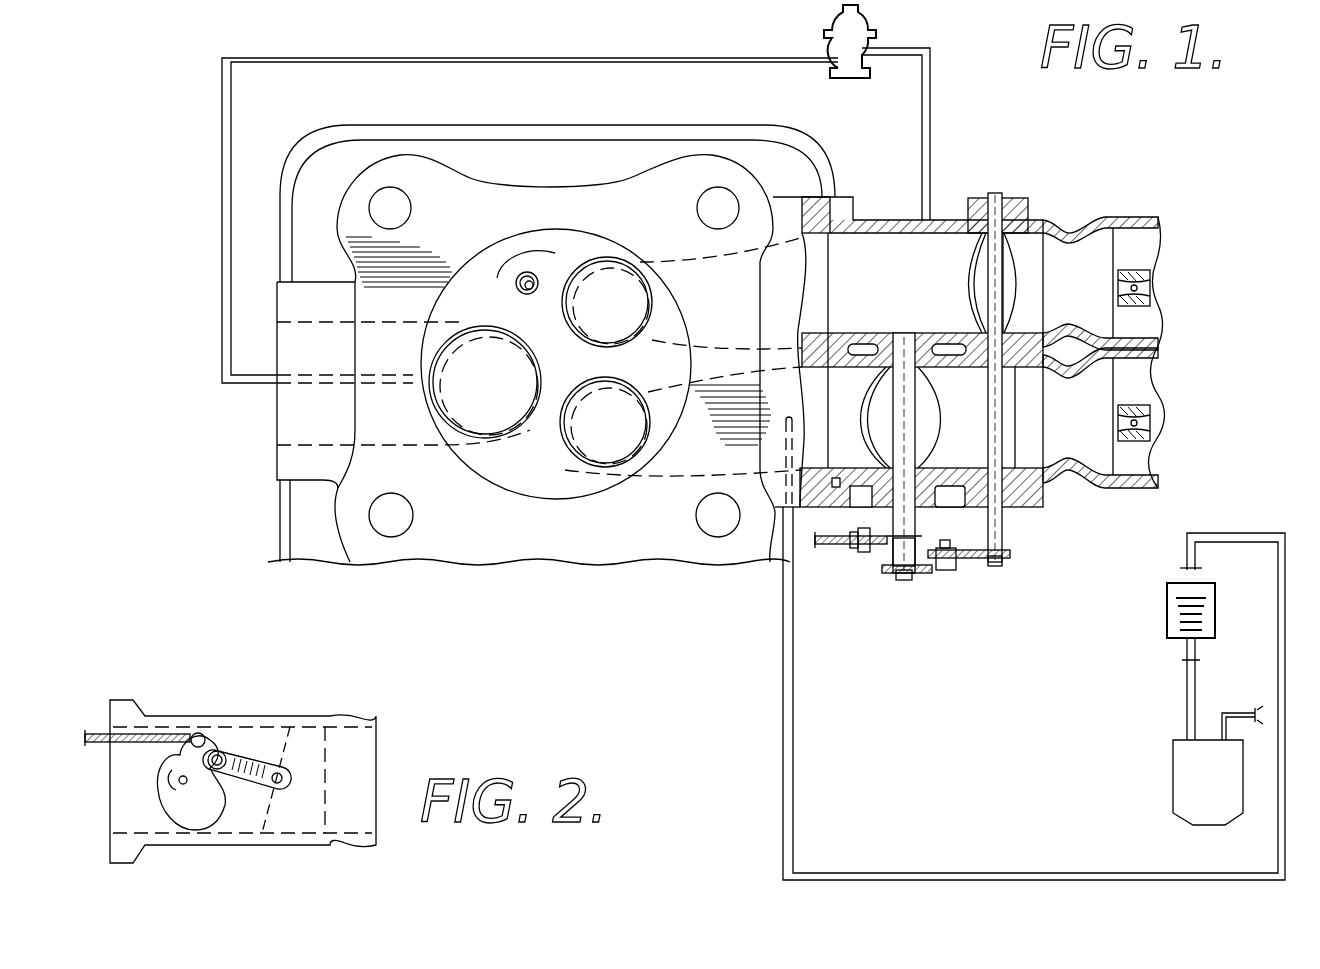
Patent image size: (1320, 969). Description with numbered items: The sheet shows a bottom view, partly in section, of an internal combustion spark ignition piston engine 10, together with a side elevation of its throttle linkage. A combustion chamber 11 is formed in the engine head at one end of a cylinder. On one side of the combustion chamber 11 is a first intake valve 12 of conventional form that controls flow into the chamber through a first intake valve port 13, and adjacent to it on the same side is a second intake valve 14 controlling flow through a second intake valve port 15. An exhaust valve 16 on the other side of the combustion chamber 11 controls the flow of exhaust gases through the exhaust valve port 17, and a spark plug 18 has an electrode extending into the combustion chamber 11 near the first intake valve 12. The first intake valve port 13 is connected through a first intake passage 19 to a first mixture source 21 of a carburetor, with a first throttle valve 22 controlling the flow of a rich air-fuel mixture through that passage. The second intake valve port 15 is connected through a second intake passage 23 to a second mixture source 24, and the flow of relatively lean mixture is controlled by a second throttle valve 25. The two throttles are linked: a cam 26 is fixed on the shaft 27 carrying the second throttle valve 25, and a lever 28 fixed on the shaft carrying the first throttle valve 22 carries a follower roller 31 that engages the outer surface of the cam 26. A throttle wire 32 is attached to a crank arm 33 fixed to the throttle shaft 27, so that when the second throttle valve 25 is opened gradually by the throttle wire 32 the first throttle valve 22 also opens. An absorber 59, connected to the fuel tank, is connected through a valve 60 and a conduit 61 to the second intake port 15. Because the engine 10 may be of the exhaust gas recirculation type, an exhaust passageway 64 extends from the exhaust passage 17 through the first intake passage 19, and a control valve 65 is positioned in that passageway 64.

In FIG. 1, the internal combustion spark ignition piston engine 10 is at (272, 461).
In FIG. 1, the combustion chamber 11 is at (545, 480).
In FIG. 1, the first intake valve 12 is at (624, 317).
In FIG. 1, the first intake valve port 13 is at (772, 310).
In FIG. 1, the second intake valve 14 is at (622, 437).
In FIG. 1, the second intake valve port 15 is at (740, 405).
In FIG. 1, the exhaust valve 16 is at (498, 396).
In FIG. 1, the exhaust valve port 17 is at (312, 435).
In FIG. 1, the spark plug 18 is at (512, 289).
In FIG. 1, the first intake passage 19 is at (935, 240).
In FIG. 1, the first mixture source 21 is at (1098, 282).
In FIG. 1, the first throttle valve 22 is at (1020, 260).
In FIG. 2, the first throttle valve 22 is at (275, 838).
In FIG. 1, the second intake passage 23 is at (979, 441).
In FIG. 1, the second mixture source 24 is at (1106, 434).
In FIG. 1, the second throttle valve 25 is at (880, 430).
In FIG. 2, the second throttle valve 25 is at (203, 833).
In FIG. 1, the cam 26 is at (913, 580).
In FIG. 2, the cam 26 is at (213, 815).
In FIG. 1, the shaft 27 is at (896, 570).
In FIG. 2, the shaft 27 is at (175, 783).
In FIG. 1, the lever 28 is at (972, 560).
In FIG. 2, the lever 28 is at (245, 758).
In FIG. 2, the follower roller 31 is at (219, 750).
In FIG. 1, the throttle wire 32 is at (832, 548).
In FIG. 2, the throttle wire 32 is at (100, 718).
In FIG. 2, the crank arm 33 is at (198, 728).
In FIG. 1, the absorber 59 is at (1190, 796).
In FIG. 1, the valve 60 is at (1165, 612).
In FIG. 1, the conduit 61 is at (790, 708).
In FIG. 1, the exhaust passageway 64 is at (432, 58).
In FIG. 1, the control valve 65 is at (832, 30).